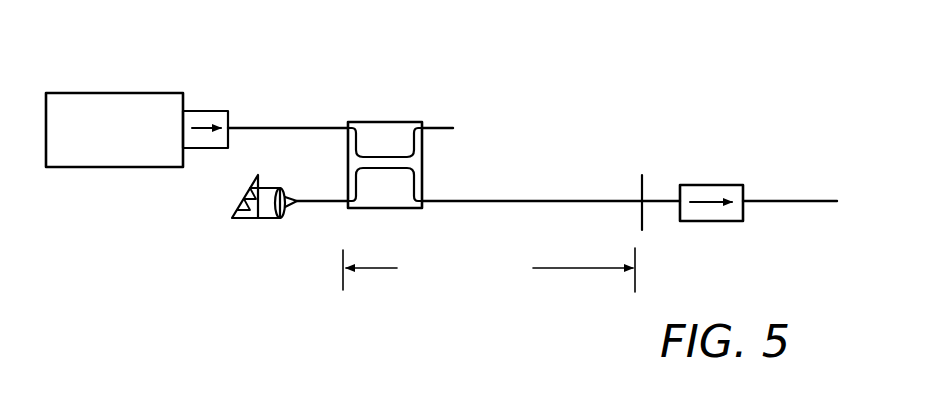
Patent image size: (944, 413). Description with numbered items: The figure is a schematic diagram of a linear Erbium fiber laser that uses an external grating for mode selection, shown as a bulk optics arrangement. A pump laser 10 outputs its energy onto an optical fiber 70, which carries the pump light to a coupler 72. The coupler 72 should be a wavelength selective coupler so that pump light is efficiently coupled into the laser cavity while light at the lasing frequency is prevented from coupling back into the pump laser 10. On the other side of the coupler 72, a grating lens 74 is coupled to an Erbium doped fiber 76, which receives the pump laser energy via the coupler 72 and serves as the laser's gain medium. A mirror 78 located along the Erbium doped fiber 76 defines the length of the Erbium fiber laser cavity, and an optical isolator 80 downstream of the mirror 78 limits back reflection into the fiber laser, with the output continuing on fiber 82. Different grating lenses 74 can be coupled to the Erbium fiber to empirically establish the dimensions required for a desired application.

The pump laser 10 is at (103, 92).
The optical fiber 70 is at (268, 124).
The coupler 72 is at (390, 121).
The grating lens 74 is at (255, 223).
The Erbium doped fiber 76 is at (510, 203).
The mirror 78 is at (638, 183).
The optical isolator 80 is at (728, 222).
The output fiber 82 is at (782, 201).